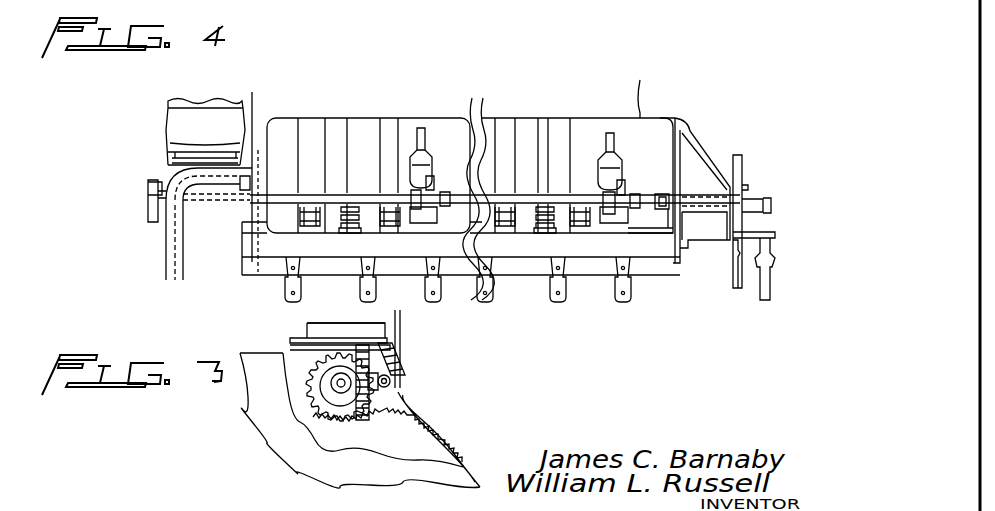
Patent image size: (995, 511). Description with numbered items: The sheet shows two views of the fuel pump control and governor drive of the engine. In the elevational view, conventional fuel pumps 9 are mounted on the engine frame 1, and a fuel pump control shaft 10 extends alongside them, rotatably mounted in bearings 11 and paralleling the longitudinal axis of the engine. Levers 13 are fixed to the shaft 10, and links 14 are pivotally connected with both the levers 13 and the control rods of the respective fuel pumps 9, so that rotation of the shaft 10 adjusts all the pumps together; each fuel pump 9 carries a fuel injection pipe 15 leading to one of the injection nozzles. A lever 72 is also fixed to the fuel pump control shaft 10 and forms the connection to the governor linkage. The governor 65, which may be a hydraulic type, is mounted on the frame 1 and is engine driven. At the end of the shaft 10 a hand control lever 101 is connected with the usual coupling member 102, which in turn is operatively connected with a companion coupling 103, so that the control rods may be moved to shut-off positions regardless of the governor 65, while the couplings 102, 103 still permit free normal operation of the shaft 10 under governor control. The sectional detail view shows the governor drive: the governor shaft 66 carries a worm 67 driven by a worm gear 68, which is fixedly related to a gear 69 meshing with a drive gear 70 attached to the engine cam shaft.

In FIG. 4, the engine frame 1 is at (648, 124).
In FIG. 5, the engine frame 1 is at (253, 353).
In FIG. 4, the fuel pumps 9 is at (434, 157).
In FIG. 4, the fuel pump control shaft 10 is at (147, 189).
In FIG. 5, the fuel pump control shaft 10 is at (403, 387).
In FIG. 4, the bearings 11 is at (420, 194).
In FIG. 4, the levers 13 is at (438, 196).
In FIG. 4, the links 14 is at (436, 178).
In FIG. 4, the fuel injection pipe 15 is at (424, 130).
In FIG. 4, the governor 65 is at (173, 118).
In FIG. 5, the governor 65 is at (327, 328).
In FIG. 5, the governor shaft 66 is at (378, 353).
In FIG. 5, the worm 67 is at (358, 391).
In FIG. 5, the worm gear 68 is at (336, 373).
In FIG. 5, the gear 69 is at (318, 385).
In FIG. 5, the drive gear 70 is at (322, 409).
In FIG. 4, the lever 72 is at (147, 208).
In FIG. 4, the hand control lever 101 is at (768, 224).
In FIG. 4, the coupling member 102 is at (676, 201).
In FIG. 4, the companion coupling 103 is at (650, 221).